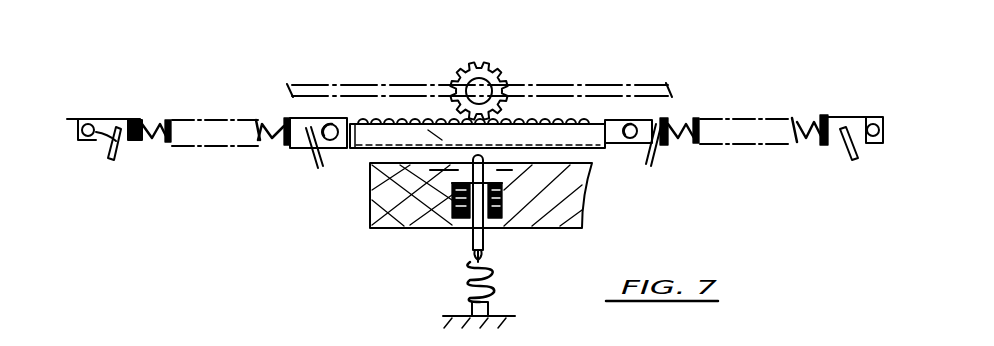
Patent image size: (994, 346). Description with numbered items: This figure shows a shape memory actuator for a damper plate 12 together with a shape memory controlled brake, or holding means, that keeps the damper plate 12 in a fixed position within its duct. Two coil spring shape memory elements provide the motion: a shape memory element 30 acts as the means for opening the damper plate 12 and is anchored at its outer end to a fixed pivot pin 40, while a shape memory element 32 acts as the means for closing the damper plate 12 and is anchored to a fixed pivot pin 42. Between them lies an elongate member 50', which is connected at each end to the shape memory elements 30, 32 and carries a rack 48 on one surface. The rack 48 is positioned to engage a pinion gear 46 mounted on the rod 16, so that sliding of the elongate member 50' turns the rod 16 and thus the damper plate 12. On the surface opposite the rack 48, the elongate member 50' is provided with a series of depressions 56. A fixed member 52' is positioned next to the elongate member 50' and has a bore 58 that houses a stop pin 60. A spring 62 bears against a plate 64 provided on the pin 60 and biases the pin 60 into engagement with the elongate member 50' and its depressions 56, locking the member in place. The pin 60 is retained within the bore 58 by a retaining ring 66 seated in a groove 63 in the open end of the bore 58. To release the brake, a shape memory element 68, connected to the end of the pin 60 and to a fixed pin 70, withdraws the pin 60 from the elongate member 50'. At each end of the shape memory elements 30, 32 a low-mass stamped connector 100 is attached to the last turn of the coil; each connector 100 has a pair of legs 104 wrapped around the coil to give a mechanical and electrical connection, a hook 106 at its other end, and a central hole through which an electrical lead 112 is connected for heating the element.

The damper plate 12 is at (648, 85).
The rod 16 is at (482, 88).
The shape memory element 30 is at (172, 120).
The shape memory element 32 is at (798, 120).
The fixed pivot pin 40 is at (92, 128).
The fixed pivot pin 42 is at (880, 118).
The pinion gear 46 is at (470, 64).
The rack 48 is at (548, 120).
The elongate member 50' is at (293, 160).
The fixed member 52' is at (439, 217).
The depressions 56 is at (596, 150).
The bore 58 is at (370, 211).
The stop pin 60 is at (489, 252).
The spring 62 is at (470, 228).
The groove 63 is at (450, 170).
The plate 64 is at (424, 214).
The retaining ring 66 is at (505, 170).
The shape memory element 68 is at (500, 278).
The fixed pin 70 is at (488, 302).
The connector 100 is at (80, 120).
The legs 104 is at (132, 120).
The hook 106 is at (88, 142).
The electrical lead 112 is at (125, 156).